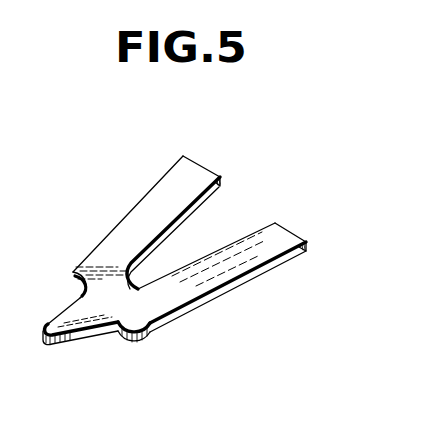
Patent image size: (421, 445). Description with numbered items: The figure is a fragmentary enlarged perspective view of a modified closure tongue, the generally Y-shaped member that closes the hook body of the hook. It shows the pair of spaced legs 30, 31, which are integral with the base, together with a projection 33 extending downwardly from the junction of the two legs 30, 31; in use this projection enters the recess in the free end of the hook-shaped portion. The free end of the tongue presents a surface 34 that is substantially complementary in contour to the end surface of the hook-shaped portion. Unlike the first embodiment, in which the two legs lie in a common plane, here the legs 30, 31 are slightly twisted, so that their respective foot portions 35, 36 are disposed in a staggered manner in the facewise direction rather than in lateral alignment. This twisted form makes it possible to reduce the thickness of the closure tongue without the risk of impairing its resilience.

The leg 30 is at (123, 220).
The leg 31 is at (207, 285).
The projection 33 is at (78, 330).
The surface 34 is at (132, 332).
The foot portion 35 is at (183, 156).
The foot portion 36 is at (293, 229).